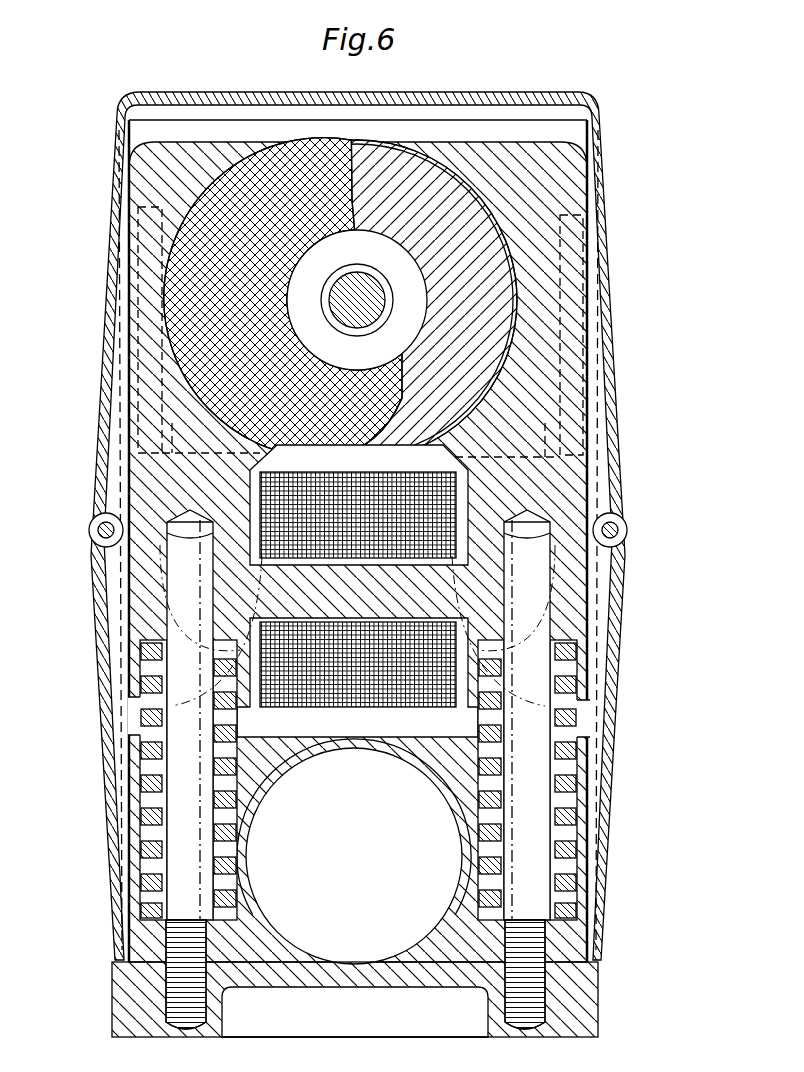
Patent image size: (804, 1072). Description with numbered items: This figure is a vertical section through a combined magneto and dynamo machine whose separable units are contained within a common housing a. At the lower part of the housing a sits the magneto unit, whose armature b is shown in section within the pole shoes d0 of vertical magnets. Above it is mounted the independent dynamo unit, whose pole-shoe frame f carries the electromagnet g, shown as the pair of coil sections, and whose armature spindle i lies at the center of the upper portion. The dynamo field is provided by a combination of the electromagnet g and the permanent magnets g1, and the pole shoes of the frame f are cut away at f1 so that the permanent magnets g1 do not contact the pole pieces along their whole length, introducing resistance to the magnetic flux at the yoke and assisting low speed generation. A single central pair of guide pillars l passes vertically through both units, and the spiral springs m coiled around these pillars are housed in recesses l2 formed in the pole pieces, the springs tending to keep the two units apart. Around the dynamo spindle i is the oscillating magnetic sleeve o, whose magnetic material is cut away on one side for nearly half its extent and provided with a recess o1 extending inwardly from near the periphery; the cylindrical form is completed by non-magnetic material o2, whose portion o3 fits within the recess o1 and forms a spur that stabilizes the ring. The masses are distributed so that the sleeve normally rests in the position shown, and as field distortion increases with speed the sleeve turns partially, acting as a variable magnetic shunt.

The housing a is at (250, 453).
The pole-shoe frame f is at (170, 322).
The permanent magnets g1 is at (165, 383).
The cut-away portion of pole shoes f1 is at (160, 476).
The magnetic sleeve o is at (430, 164).
The recess o1 is at (402, 400).
The non-magnetic material o2 is at (302, 162).
The spur portion o3 is at (383, 356).
The dynamo spindle i is at (386, 300).
The electromagnet g is at (368, 704).
The armature b is at (354, 851).
The guide pillars l is at (357, 715).
The recesses l2 is at (140, 695).
The spiral springs m is at (160, 820).
The pole shoes d0 is at (272, 965).